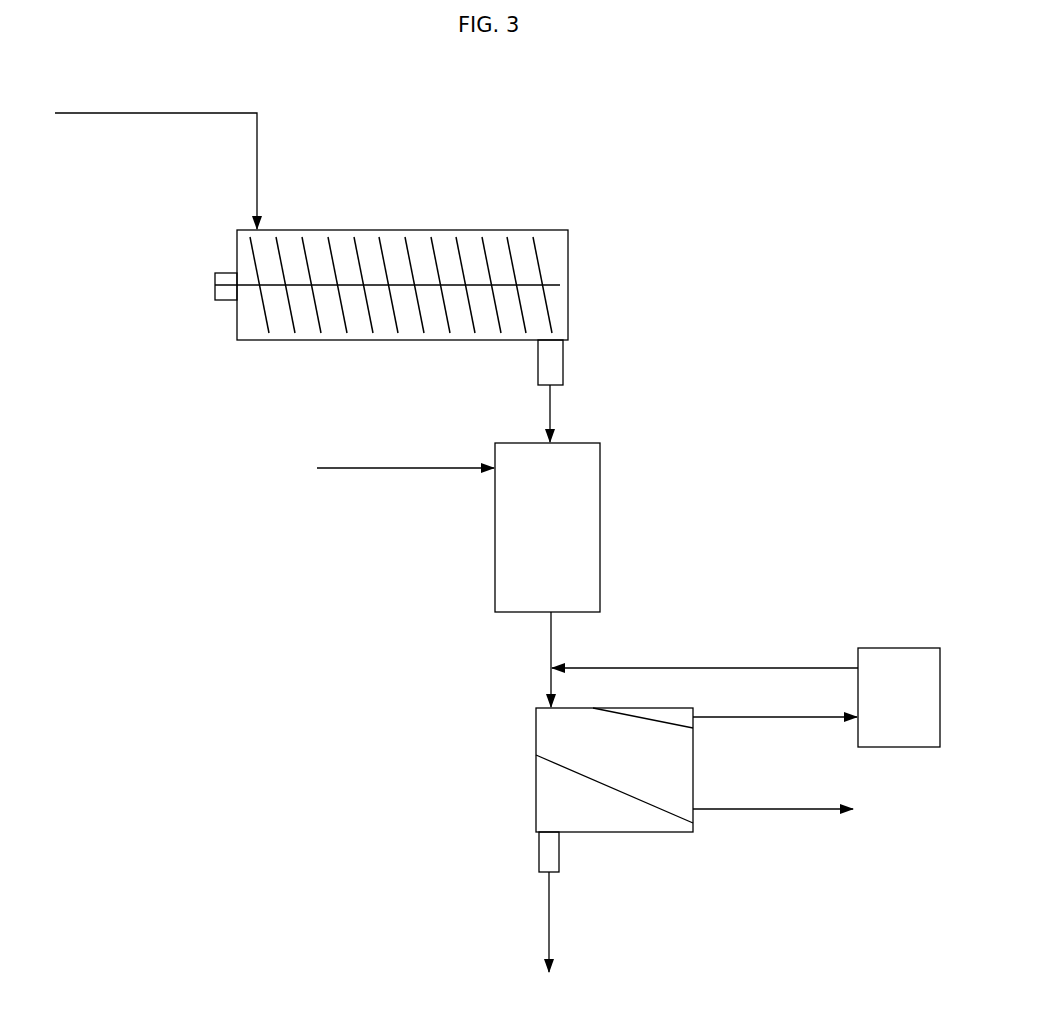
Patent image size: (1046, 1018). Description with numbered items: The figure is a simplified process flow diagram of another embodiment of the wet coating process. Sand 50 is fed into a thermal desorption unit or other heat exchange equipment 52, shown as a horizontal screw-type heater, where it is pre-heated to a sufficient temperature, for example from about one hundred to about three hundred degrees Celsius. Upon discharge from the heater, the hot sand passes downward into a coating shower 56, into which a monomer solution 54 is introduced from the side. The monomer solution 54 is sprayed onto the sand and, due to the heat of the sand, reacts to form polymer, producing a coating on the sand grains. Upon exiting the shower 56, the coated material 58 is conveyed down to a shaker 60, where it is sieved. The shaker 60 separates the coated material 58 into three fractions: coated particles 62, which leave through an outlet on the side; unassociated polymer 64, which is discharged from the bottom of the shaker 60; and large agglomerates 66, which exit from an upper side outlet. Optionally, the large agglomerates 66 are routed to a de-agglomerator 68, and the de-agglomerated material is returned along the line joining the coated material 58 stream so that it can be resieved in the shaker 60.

The sand 50 is at (156, 156).
The thermal desorption unit or other heat exchange equipment 52 is at (397, 230).
The monomer solution 54 is at (405, 450).
The shower 56 is at (547, 527).
The coated material 58 is at (536, 659).
The shaker 60 is at (614, 790).
The coated particles 62 is at (773, 794).
The unassociated polymer 64 is at (569, 922).
The large agglomerates 66 is at (775, 700).
The de-agglomerator 68 is at (746, 697).